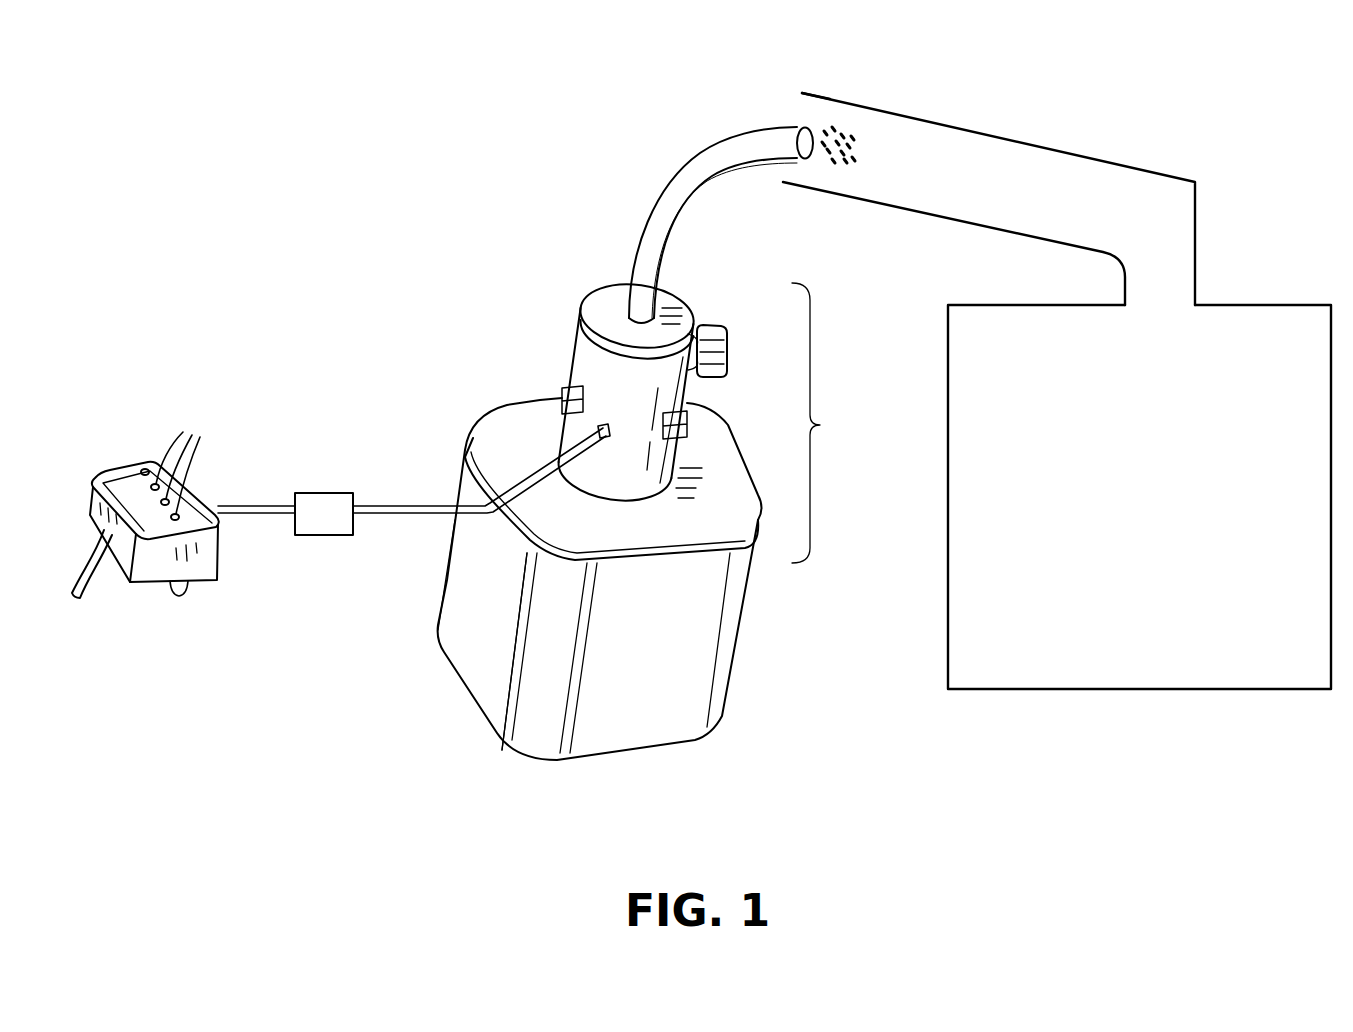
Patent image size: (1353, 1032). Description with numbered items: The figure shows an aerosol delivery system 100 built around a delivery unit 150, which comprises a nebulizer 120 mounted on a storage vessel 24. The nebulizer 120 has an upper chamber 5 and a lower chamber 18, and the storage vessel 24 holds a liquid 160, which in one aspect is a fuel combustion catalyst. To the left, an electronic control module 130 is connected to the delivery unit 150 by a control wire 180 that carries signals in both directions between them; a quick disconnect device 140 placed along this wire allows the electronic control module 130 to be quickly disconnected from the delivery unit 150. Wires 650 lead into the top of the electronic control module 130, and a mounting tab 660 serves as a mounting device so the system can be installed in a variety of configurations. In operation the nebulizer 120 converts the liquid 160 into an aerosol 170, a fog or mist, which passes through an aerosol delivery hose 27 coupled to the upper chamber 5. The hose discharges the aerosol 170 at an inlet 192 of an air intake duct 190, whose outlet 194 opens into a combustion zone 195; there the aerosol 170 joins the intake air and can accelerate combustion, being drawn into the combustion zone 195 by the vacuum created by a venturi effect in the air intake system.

The aerosol delivery system 100 is at (358, 780).
The electronic control module 130 is at (115, 458).
The wires 650 is at (200, 456).
The mounting tab 660 is at (180, 597).
The quick disconnect device 140 is at (325, 488).
The control wire 180 is at (378, 533).
The delivery unit 150 is at (522, 357).
The upper chamber 5 is at (680, 300).
The lower chamber 18 is at (697, 455).
The nebulizer 120 is at (837, 423).
The liquid 160 is at (650, 728).
The storage vessel 24 is at (533, 733).
The aerosol delivery hose 27 is at (690, 200).
The aerosol 170 is at (868, 149).
The air intake duct 190 is at (929, 120).
The duct inlet 192 is at (796, 104).
The duct outlet 194 is at (1154, 293).
The combustion zone 195 is at (1045, 658).